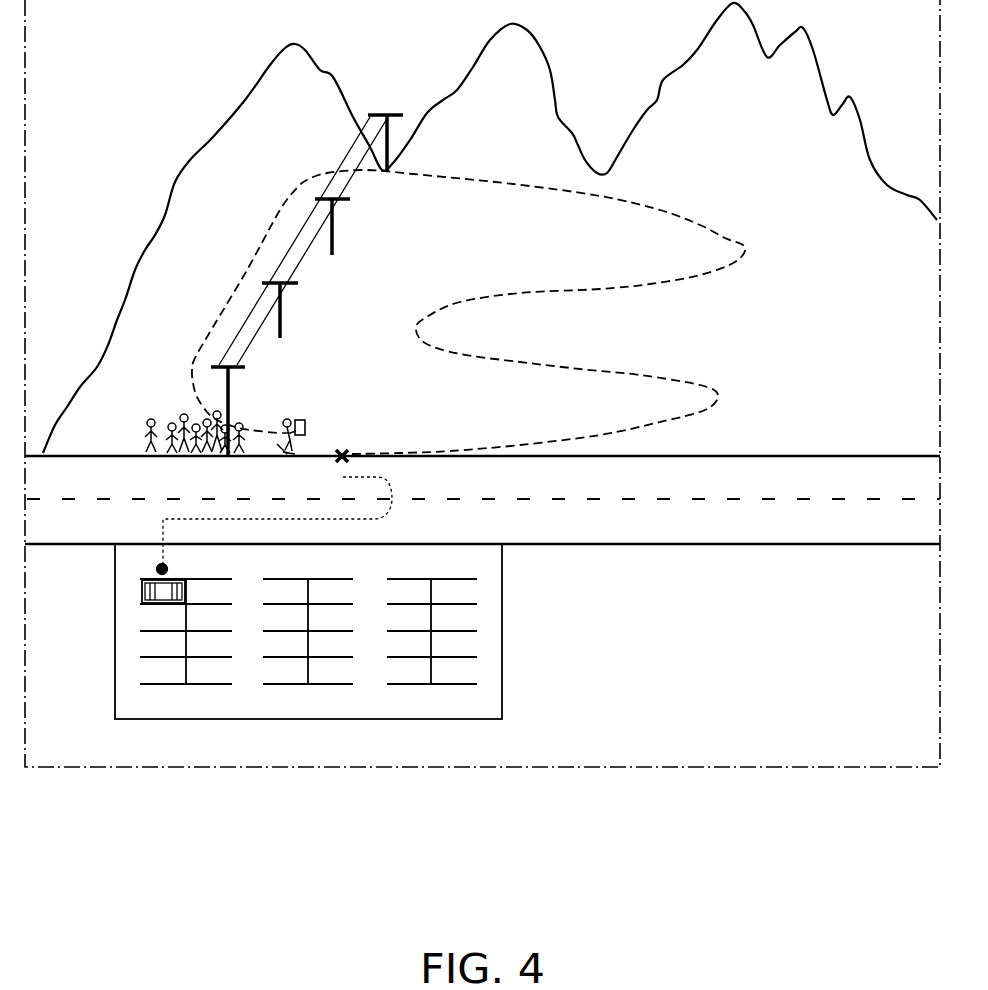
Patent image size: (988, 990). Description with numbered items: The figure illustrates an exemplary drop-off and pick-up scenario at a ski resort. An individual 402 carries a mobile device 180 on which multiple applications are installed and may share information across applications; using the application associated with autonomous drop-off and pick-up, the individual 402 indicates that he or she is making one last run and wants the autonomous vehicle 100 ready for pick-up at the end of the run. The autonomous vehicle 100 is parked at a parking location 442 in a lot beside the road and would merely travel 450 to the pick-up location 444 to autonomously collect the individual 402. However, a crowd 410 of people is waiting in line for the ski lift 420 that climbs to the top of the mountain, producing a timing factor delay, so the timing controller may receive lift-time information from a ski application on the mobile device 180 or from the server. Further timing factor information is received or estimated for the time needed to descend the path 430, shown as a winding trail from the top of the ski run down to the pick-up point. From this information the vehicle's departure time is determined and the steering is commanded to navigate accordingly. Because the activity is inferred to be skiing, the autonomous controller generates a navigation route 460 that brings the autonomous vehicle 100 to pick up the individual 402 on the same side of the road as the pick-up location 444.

The autonomous vehicle 100 is at (142, 592).
The mobile device 180 is at (307, 427).
The individual 402 is at (287, 418).
The crowd 410 is at (165, 410).
The ski lift 420 is at (252, 261).
The path 430 is at (513, 184).
The parking location 442 is at (156, 568).
The pick-up location 444 is at (367, 442).
The travel 450 is at (168, 564).
The navigation route 460 is at (387, 480).